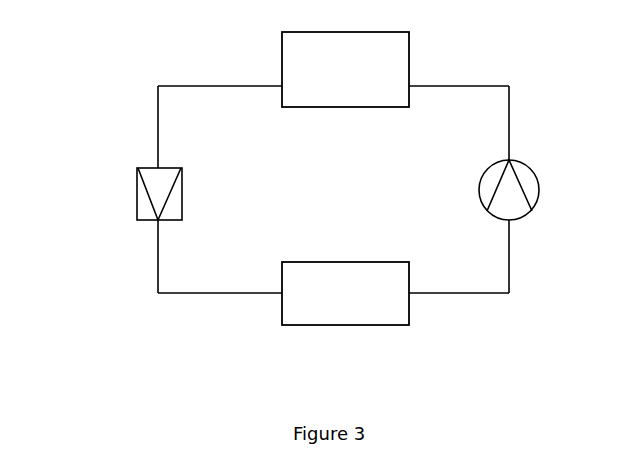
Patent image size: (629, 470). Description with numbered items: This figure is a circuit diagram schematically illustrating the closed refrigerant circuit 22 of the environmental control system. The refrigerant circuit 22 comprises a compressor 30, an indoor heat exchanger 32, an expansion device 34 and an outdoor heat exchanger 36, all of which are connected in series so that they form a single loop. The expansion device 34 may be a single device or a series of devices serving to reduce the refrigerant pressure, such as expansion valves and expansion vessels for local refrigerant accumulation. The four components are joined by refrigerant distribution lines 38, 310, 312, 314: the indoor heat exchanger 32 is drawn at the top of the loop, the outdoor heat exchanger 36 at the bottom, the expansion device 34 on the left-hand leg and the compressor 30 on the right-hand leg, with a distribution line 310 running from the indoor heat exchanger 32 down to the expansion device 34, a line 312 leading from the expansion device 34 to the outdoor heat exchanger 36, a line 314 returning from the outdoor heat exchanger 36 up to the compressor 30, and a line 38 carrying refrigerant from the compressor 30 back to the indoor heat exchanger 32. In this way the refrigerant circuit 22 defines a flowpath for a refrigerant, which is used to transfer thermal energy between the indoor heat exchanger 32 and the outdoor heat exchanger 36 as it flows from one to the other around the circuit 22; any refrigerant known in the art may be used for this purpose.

The refrigerant circuit 22 is at (104, 56).
The compressor 30 is at (535, 208).
The indoor heat exchanger 32 is at (315, 108).
The expansion device 34 is at (137, 200).
The outdoor heat exchanger 36 is at (350, 325).
The refrigerant distribution line 38 is at (512, 90).
The refrigerant distribution line 310 is at (158, 92).
The refrigerant distribution line 312 is at (210, 293).
The refrigerant distribution line 314 is at (511, 283).